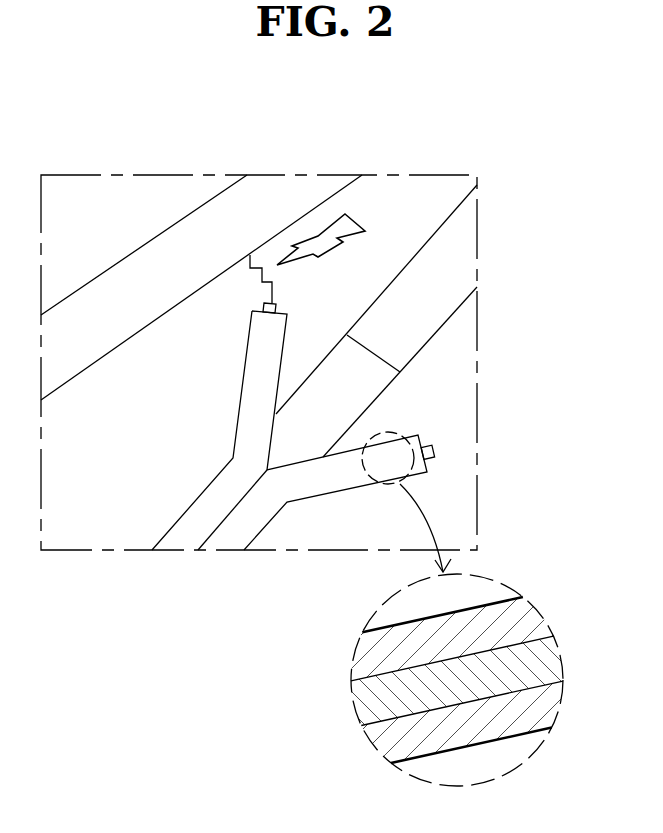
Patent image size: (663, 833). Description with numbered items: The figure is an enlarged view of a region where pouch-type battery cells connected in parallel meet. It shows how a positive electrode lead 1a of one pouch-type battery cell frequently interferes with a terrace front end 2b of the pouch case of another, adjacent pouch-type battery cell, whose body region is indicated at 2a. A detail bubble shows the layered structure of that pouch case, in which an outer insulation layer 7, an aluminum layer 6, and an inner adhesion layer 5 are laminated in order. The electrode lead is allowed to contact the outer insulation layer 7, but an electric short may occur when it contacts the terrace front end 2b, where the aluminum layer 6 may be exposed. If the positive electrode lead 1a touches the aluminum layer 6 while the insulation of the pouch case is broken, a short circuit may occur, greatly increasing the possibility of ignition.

The positive electrode lead 1a is at (141, 246).
The second frame member 2a is at (428, 258).
The terrace front end 2b is at (245, 362).
The inner adhesion layer 5 is at (527, 620).
The aluminum layer 6 is at (277, 306).
The outer insulation layer 7 is at (540, 713).